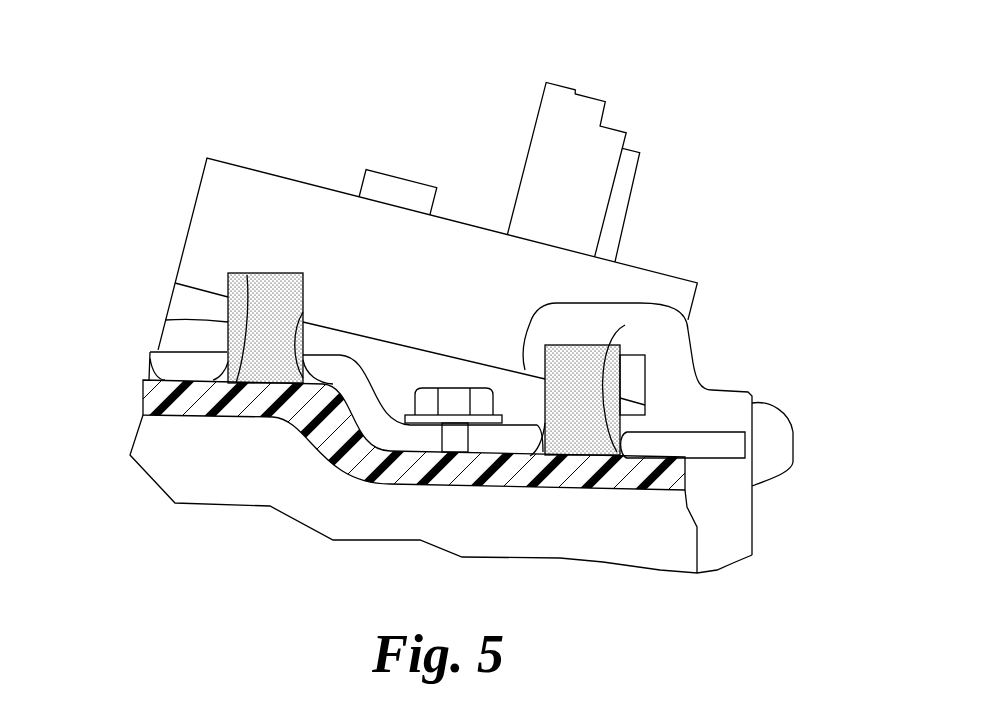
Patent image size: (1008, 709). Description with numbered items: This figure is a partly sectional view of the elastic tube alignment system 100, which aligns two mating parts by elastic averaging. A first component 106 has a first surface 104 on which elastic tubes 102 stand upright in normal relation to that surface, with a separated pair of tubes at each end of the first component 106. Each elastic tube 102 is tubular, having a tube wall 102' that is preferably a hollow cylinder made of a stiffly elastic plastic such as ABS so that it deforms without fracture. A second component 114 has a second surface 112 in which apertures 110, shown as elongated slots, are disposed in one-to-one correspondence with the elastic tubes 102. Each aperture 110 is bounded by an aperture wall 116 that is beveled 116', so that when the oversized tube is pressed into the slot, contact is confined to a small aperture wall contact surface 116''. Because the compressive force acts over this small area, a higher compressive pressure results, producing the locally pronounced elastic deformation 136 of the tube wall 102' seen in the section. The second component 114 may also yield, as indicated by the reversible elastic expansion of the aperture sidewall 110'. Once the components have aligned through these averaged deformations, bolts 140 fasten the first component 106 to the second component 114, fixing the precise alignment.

The elastic tube alignment system 100 is at (261, 400).
The elastic tube alignment feature 102 is at (490, 350).
The tube wall 102' is at (378, 344).
The first surface 104 is at (150, 364).
The first component 106 is at (247, 426).
The aperture alignment feature 110 is at (462, 444).
The elastic expansion of aperture sidewall 110' is at (417, 334).
The second surface 112 is at (693, 430).
The second component 114 is at (754, 439).
The aperture wall 116 is at (382, 479).
The beveling 116' is at (367, 452).
The aperture wall contact surface 116'' is at (430, 341).
The elastic deformation 136 is at (306, 352).
The bolt 140 is at (425, 387).